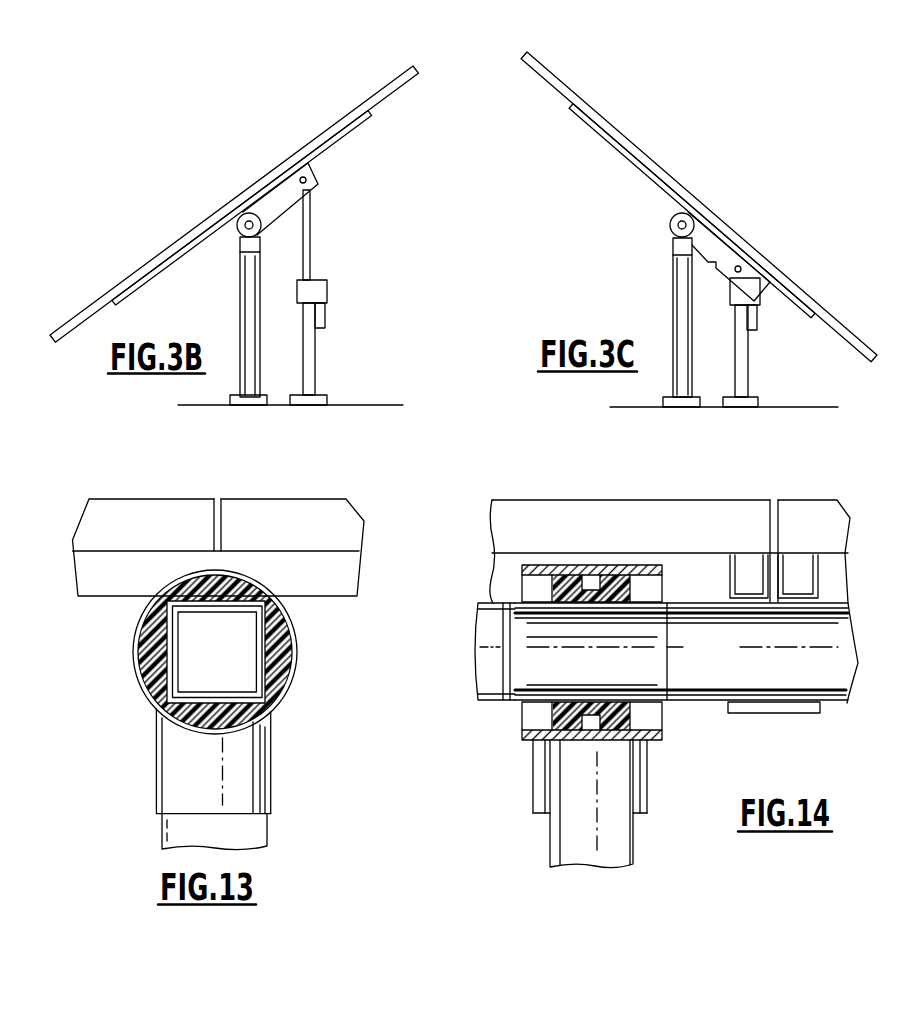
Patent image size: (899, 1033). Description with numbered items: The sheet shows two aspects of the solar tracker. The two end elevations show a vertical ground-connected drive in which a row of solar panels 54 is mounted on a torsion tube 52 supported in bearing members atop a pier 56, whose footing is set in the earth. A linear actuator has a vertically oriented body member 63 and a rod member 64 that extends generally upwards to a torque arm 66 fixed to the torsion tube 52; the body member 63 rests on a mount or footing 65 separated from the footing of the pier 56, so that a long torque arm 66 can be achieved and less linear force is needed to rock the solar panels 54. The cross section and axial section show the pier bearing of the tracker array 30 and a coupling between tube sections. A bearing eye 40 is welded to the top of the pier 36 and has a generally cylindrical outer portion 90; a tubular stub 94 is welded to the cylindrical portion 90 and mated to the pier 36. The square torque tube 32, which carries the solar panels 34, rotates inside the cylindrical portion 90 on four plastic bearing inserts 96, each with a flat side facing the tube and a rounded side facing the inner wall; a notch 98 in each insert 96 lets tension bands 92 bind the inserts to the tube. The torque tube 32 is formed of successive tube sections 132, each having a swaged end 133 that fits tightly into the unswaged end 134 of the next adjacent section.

In FIG. 3B, the solar panels 54 is at (352, 114).
In FIG. 3C, the solar panels 54 is at (601, 113).
In FIG. 3B, the pier 56 is at (242, 310).
In FIG. 3C, the pier 56 is at (673, 310).
In FIG. 3B, the torque arm 66 is at (275, 198).
In FIG. 3C, the torque arm 66 is at (712, 241).
In FIG. 3B, the rod member 64 is at (311, 236).
In FIG. 3B, the body member 63 is at (316, 348).
In FIG. 3C, the body member 63 is at (761, 291).
In FIG. 3B, the mount or footing 65 is at (326, 399).
In FIG. 3C, the torsion tube 52 is at (669, 226).
In FIG. 13, the solar panels 34 is at (322, 499).
In FIG. 14, the solar panels 34 is at (737, 500).
In FIG. 13, the plastic bearing inserts 96 is at (228, 568).
In FIG. 14, the plastic bearing inserts 96 is at (550, 719).
In FIG. 13, the tension bands 92 is at (274, 598).
In FIG. 13, the cylindrical outer portion 90 is at (138, 656).
In FIG. 14, the cylindrical outer portion 90 is at (538, 567).
In FIG. 13, the swaged end 133 is at (247, 674).
In FIG. 14, the swaged end 133 is at (647, 618).
In FIG. 13, the torque tube 32 is at (264, 635).
In FIG. 14, the torque tube 32 is at (837, 707).
In FIG. 13, the unswaged end 134 is at (289, 674).
In FIG. 14, the unswaged end 134 is at (662, 603).
In FIG. 13, the bearing eye 40 is at (147, 726).
In FIG. 14, the bearing eye 40 is at (530, 738).
In FIG. 13, the tubular stub 94 is at (156, 785).
In FIG. 13, the pier 36 is at (262, 832).
In FIG. 14, the notch 98 is at (617, 575).
In FIG. 14, the tube section 132 is at (480, 694).
In FIG. 14, the solar tracker array 30 is at (625, 851).